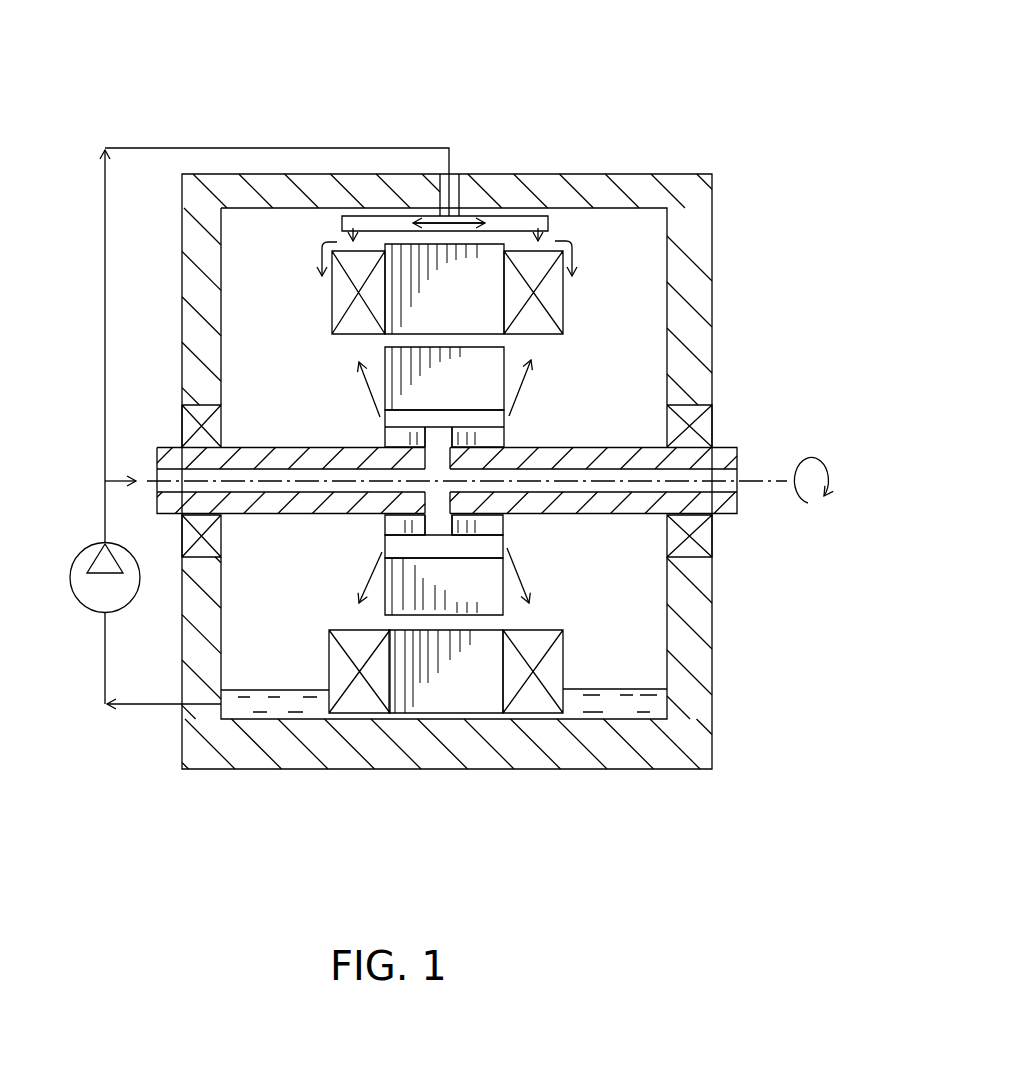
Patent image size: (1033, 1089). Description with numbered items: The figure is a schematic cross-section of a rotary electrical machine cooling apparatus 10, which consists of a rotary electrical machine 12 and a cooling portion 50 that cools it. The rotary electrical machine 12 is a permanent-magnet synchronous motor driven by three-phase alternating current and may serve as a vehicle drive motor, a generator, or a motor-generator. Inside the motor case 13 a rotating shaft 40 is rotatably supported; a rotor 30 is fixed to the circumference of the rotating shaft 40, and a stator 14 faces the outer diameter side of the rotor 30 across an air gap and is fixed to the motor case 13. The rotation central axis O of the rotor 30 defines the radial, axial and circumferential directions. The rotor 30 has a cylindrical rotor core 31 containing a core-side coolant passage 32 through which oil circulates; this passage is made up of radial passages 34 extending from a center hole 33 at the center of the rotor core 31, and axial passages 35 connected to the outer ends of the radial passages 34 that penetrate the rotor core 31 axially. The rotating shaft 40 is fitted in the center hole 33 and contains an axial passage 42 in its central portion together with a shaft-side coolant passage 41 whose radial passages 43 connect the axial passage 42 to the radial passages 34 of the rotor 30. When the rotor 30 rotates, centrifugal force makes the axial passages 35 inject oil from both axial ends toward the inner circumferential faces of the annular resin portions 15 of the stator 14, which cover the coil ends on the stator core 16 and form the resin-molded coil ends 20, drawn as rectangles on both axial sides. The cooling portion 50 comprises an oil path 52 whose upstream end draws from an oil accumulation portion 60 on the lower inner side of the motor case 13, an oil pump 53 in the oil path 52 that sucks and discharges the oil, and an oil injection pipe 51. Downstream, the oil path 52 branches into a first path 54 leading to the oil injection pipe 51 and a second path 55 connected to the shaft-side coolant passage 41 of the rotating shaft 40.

The rotary electrical machine cooling apparatus 10 is at (630, 95).
The rotary electrical machine 12 is at (716, 203).
The motor case 13 is at (630, 174).
The stator 14 is at (449, 301).
The annular resin portions 15 is at (330, 309).
The stator core 16 is at (402, 698).
The resin-molded coil ends 20 is at (332, 287).
The rotor 30 is at (451, 580).
The rotor core 31 is at (385, 351).
The core-side coolant passage 32 is at (385, 427).
The center hole 33 is at (397, 503).
The radial passages 34 is at (427, 527).
The axial passages 35 is at (485, 555).
The rotating shaft 40 is at (467, 619).
The shaft-side coolant passage 41 is at (293, 490).
The axial passage 42 is at (570, 492).
The radial passages 43 is at (450, 495).
The cooling portion 50 is at (236, 433).
The oil injection pipe 51 is at (527, 213).
The oil path 52 is at (103, 513).
The oil pump 53 is at (73, 590).
The first path 54 is at (103, 249).
The second path 55 is at (117, 479).
The oil accumulation portion 60 is at (630, 705).
The rotation central axis O is at (763, 481).